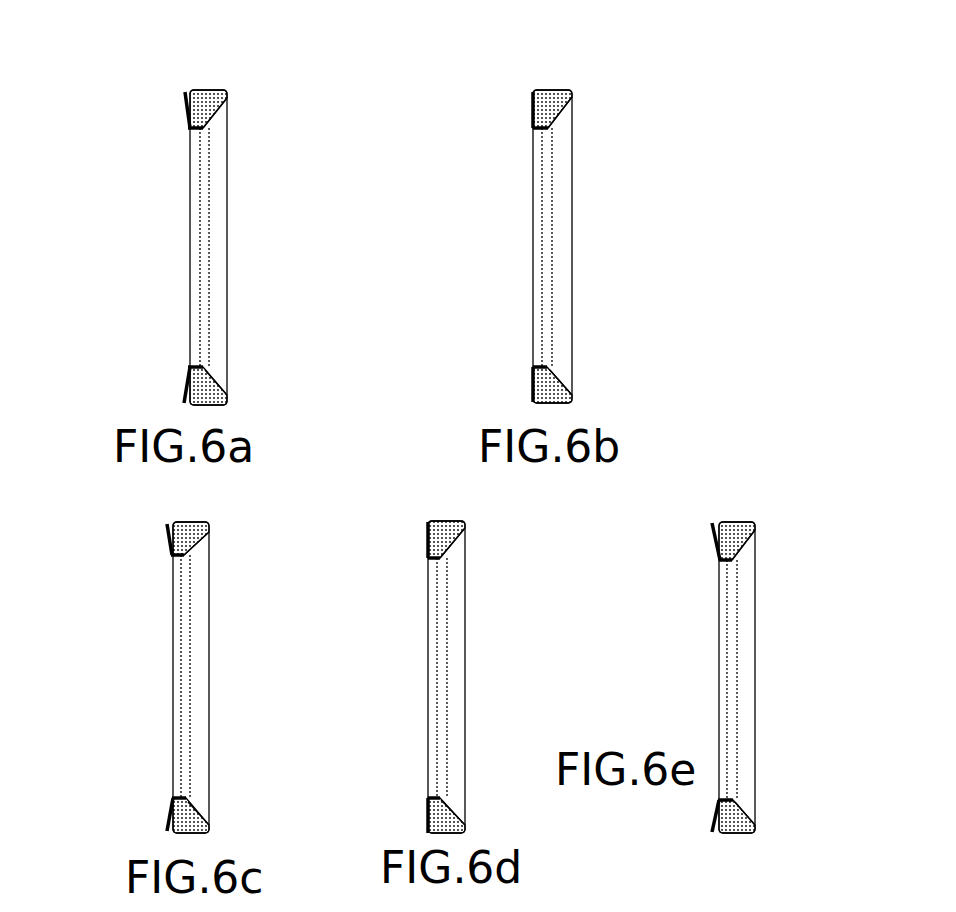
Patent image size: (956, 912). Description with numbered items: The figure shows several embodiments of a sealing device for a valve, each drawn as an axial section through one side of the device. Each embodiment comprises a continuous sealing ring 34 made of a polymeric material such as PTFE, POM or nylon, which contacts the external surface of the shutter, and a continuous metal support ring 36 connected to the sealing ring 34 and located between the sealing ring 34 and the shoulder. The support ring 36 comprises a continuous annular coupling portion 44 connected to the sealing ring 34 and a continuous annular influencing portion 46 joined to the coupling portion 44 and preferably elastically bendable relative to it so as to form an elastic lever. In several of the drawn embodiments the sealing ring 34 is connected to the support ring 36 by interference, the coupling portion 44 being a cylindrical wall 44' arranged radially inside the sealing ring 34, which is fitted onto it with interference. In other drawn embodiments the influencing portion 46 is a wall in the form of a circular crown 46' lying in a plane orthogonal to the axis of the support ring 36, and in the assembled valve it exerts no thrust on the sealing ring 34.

In FIG. 6a, the sealing ring 34 is at (206, 100).
In FIG. 6b, the sealing ring 34 is at (566, 103).
In FIG. 6c, the sealing ring 34 is at (192, 531).
In FIG. 6d, the sealing ring 34 is at (446, 677).
In FIG. 6e, the sealing ring 34 is at (736, 526).
In FIG. 6a, the support ring 36 is at (183, 107).
In FIG. 6b, the support ring 36 is at (528, 115).
In FIG. 6c, the support ring 36 is at (169, 545).
In FIG. 6d, the support ring 36 is at (426, 545).
In FIG. 6e, the support ring 36 is at (714, 552).
In FIG. 6a, the coupling portion 44 is at (144, 247).
In FIG. 6b, the coupling portion 44 is at (498, 247).
In FIG. 6c, the coupling portion 44 is at (139, 676).
In FIG. 6d, the coupling portion 44 is at (394, 678).
In FIG. 6e, the coupling portion 44 is at (767, 680).
In FIG. 6a, the cylindrical wall 44' is at (253, 226).
In FIG. 6b, the cylindrical wall 44' is at (603, 246).
In FIG. 6e, the cylindrical wall 44' is at (794, 658).
In FIG. 6b, the influencing portion 46 is at (464, 83).
In FIG. 6d, the influencing portion 46 is at (386, 519).
In FIG. 6b, the circular crown 46' is at (590, 207).
In FIG. 6d, the circular crown 46' is at (508, 681).